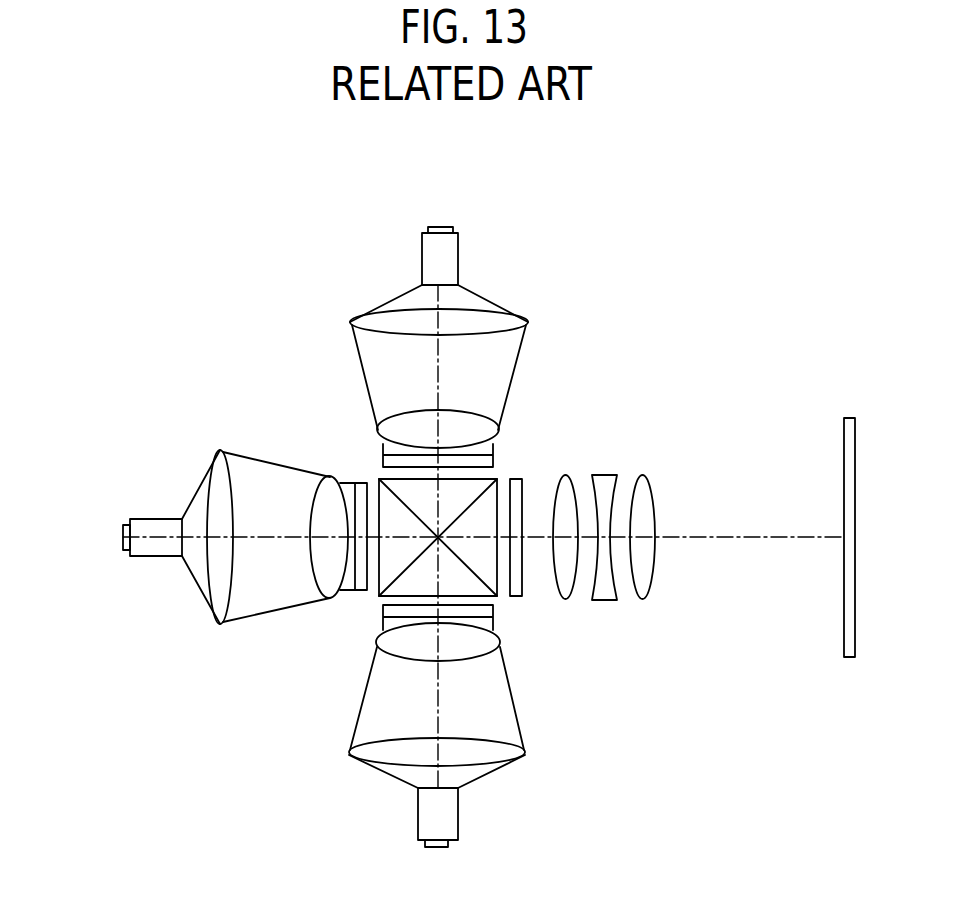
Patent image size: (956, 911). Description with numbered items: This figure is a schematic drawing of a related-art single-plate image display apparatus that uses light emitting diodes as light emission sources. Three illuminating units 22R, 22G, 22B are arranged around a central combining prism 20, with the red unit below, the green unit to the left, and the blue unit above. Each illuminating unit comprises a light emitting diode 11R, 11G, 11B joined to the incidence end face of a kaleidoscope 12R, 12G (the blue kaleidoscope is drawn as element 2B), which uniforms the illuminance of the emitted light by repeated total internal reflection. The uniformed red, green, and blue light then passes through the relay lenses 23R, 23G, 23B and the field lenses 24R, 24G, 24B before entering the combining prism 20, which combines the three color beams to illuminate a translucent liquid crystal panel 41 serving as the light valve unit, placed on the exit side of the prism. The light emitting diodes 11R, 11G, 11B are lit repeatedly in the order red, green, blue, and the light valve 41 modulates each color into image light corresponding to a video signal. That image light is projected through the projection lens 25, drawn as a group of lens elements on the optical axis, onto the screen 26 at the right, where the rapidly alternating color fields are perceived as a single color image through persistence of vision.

The light emitting diode 11B is at (442, 226).
The blue lamp housing 2B is at (425, 260).
The illuminating unit 22B is at (479, 329).
The relay lens 23B is at (525, 318).
The field lens 24B is at (497, 431).
The light emitting diode 11G is at (125, 528).
The kaleidoscope 12G is at (155, 525).
The illuminating unit 22G is at (214, 566).
The relay lens 23G is at (217, 623).
The field lens 24G is at (323, 597).
The light emitting diode 11R is at (437, 848).
The kaleidoscope 12R is at (425, 808).
The illuminating unit 22R is at (481, 754).
The relay lens 23R is at (524, 748).
The field lens 24R is at (500, 643).
The combining prism 20 is at (364, 465).
The translucent liquid crystal panel 41 is at (515, 480).
The projection lens 25 is at (660, 608).
The screen 26 is at (847, 658).